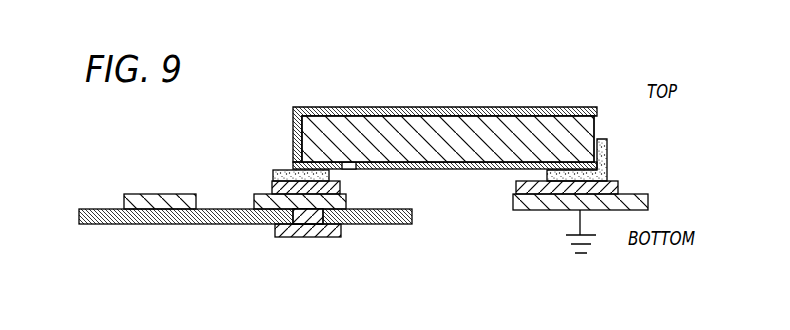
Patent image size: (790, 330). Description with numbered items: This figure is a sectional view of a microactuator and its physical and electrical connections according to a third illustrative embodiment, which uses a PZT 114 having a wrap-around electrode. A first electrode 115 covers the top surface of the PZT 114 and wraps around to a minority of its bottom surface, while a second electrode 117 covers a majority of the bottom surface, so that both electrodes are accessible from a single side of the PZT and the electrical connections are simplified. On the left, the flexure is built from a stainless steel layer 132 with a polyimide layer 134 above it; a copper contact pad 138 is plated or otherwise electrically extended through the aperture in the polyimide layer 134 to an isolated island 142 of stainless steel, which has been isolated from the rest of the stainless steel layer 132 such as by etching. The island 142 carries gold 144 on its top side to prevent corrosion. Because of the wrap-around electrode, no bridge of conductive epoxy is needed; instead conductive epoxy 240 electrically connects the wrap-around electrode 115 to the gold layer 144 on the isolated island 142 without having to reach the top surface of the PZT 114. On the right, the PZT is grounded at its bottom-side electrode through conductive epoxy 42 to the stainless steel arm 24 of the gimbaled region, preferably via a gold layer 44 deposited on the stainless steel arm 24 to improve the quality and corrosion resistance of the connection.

The PZT 114 is at (445, 117).
The first electrode 115 is at (381, 107).
The second electrode 117 is at (400, 170).
The conductive epoxy 240 is at (290, 171).
The gold 144 is at (273, 184).
The isolated island of stainless steel 142 is at (254, 203).
The stainless steel layer 132 is at (112, 199).
The polyimide layer 134 is at (95, 224).
The copper contact pad 138 is at (318, 237).
The conductive epoxy 42 is at (608, 153).
The gold layer 44 is at (618, 188).
The stainless steel arm 24 is at (650, 199).